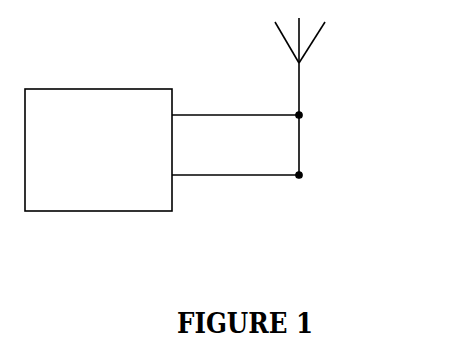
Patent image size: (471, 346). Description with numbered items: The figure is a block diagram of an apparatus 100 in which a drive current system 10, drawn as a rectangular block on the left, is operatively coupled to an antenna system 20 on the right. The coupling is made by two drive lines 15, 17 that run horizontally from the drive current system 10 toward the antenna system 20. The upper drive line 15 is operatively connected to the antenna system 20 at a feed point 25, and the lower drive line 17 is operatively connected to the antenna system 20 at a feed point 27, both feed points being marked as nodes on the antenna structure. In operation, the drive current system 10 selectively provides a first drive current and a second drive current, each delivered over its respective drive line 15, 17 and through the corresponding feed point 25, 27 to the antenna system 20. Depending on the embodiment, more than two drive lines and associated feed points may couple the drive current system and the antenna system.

The apparatus 100 is at (100, 50).
The drive current system 10 is at (98, 150).
The drive line 15 is at (227, 114).
The drive line 17 is at (243, 178).
The antenna system 20 is at (338, 102).
The feed point 25 is at (301, 117).
The feed point 27 is at (301, 177).